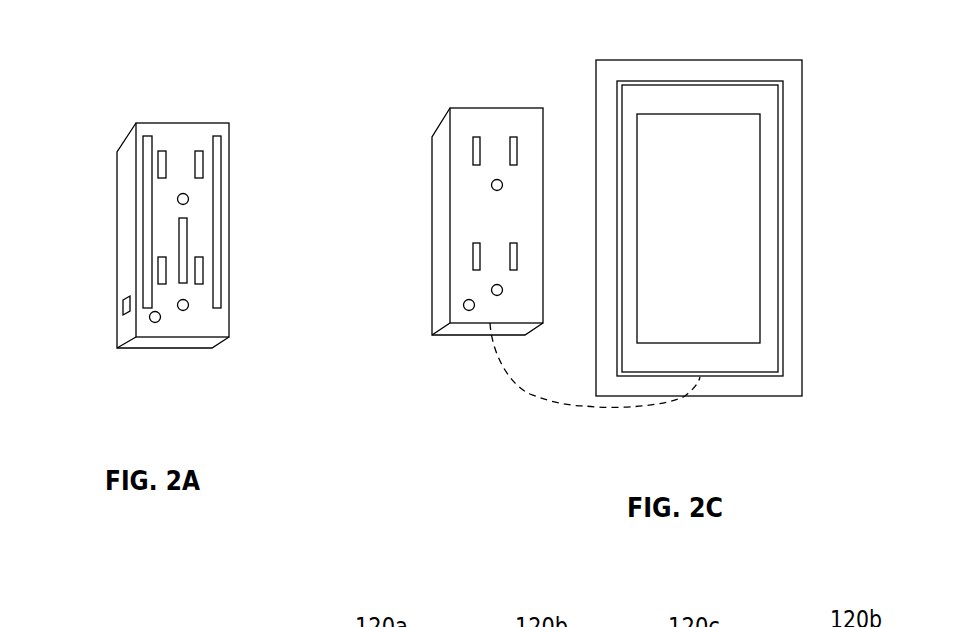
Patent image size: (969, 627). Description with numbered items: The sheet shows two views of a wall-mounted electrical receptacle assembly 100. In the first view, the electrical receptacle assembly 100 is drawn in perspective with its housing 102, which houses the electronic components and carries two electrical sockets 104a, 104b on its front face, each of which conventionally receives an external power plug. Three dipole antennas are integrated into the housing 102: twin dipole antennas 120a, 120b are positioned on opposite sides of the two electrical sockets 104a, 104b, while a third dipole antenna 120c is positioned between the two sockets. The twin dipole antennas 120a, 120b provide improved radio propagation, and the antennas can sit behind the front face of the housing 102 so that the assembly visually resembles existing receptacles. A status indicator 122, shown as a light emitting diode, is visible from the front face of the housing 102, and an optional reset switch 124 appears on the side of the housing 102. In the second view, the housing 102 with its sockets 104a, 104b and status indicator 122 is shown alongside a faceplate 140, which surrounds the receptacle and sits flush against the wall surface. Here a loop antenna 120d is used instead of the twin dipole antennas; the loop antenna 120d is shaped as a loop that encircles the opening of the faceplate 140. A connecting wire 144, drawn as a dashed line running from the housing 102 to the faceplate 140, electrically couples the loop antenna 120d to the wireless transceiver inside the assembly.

In FIG. 2A, the electrical receptacle assembly 100 is at (113, 70).
In FIG. 2C, the electrical receptacle assembly 100 is at (488, 40).
In FIG. 2A, the housing 102 is at (182, 122).
In FIG. 2C, the housing 102 is at (507, 108).
In FIG. 2A, the electrical socket 104a is at (152, 172).
In FIG. 2C, the electrical socket 104a is at (463, 150).
In FIG. 2A, the electrical socket 104b is at (152, 267).
In FIG. 2C, the electrical socket 104b is at (463, 261).
In FIG. 2A, the dipole antenna 120a is at (143, 153).
In FIG. 2A, the dipole antenna 120b is at (223, 153).
In FIG. 2A, the dipole antenna 120c is at (183, 285).
In FIG. 2C, the loop antenna 120d is at (778, 107).
In FIG. 2A, the status indicator 122 is at (155, 323).
In FIG. 2C, the status indicator 122 is at (470, 311).
In FIG. 2A, the reset switch 124 is at (122, 306).
In FIG. 2C, the faceplate 140 is at (802, 230).
In FIG. 2C, the connecting wire 144 is at (585, 406).